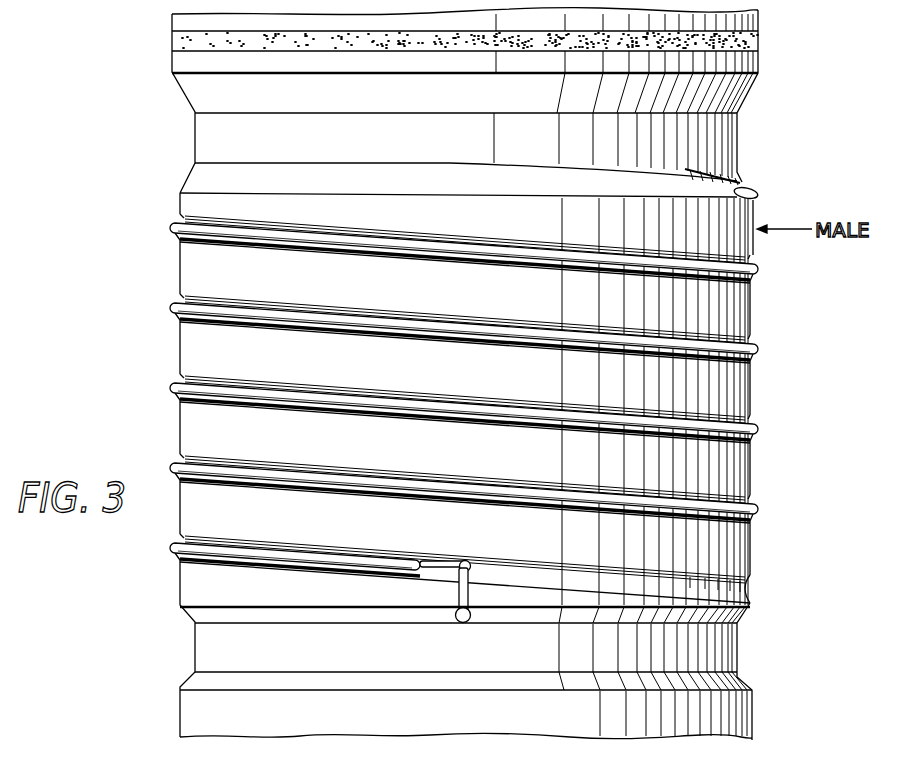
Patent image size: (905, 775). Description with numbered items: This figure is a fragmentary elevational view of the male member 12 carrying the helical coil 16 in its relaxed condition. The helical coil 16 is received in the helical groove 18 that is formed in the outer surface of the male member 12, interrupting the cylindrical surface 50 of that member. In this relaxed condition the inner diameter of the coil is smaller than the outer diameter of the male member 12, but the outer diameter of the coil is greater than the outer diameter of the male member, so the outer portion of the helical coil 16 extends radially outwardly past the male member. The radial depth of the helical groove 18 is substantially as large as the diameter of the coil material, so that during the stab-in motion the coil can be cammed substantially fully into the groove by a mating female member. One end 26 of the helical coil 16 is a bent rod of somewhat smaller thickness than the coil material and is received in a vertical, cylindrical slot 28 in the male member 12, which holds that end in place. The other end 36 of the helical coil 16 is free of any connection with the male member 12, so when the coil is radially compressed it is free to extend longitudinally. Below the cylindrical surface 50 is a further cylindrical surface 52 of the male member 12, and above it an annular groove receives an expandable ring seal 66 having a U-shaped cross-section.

The ring seal 66 is at (175, 42).
The male member 12 is at (762, 62).
The other end of the helical coil 36 is at (745, 181).
The helical coil 16 is at (762, 186).
The cylindrical surface 50 is at (753, 305).
The helical groove 18 is at (722, 579).
The cylindrical surface 52 is at (740, 654).
The end of the helical coil 26 is at (439, 556).
The cylindrical slot 28 is at (470, 596).